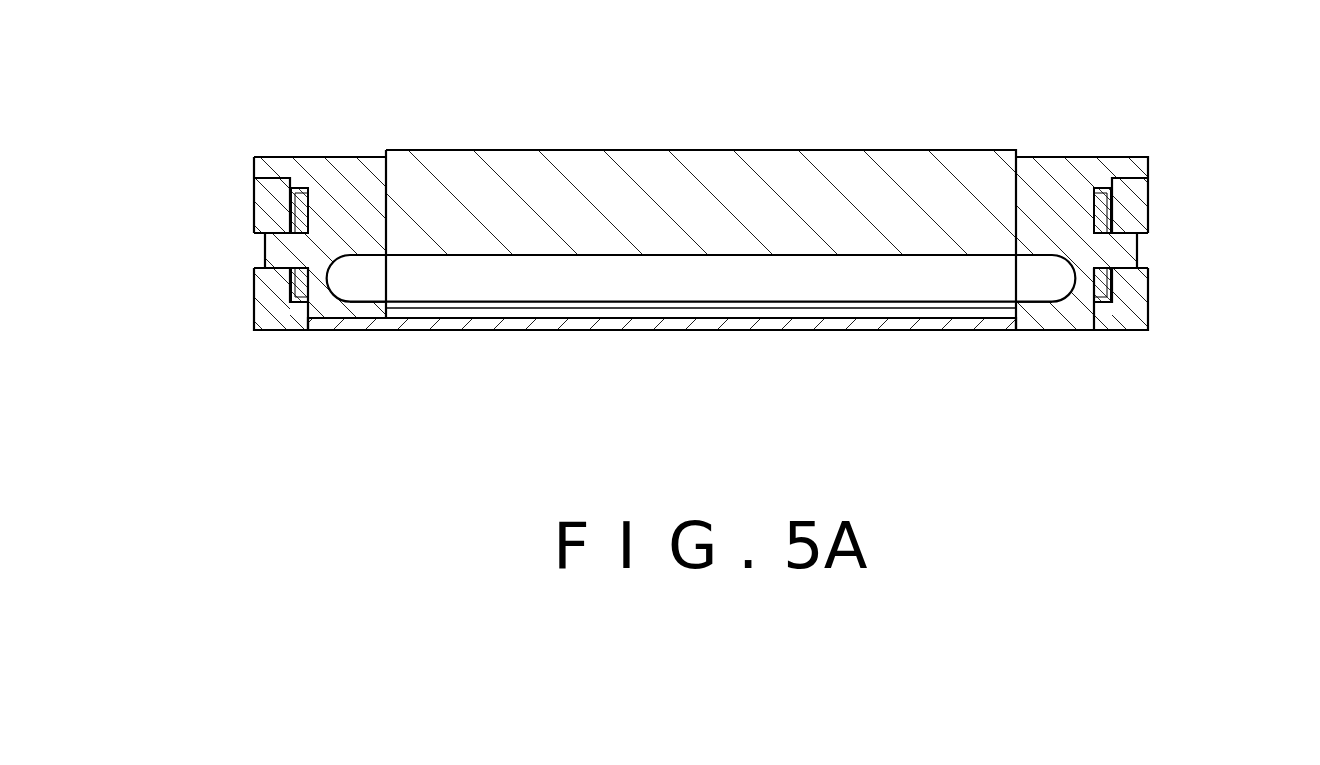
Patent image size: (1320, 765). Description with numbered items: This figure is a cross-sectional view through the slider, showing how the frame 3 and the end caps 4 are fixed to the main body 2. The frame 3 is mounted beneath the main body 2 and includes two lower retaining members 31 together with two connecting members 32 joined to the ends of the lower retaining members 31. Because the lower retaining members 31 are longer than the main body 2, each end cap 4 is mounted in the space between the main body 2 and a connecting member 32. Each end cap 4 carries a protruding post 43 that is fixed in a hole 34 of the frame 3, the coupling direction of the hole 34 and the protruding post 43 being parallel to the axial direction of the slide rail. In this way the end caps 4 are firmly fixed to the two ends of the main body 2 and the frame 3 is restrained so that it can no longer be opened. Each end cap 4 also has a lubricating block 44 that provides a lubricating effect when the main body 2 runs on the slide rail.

The main body 2 is at (723, 182).
The frame 3 is at (394, 355).
The lower retaining member 31 is at (637, 323).
The connecting member 32 is at (272, 303).
The hole 34 is at (257, 252).
The end cap 4 is at (363, 187).
The protruding post 43 is at (280, 250).
The lubricating block 44 is at (302, 215).